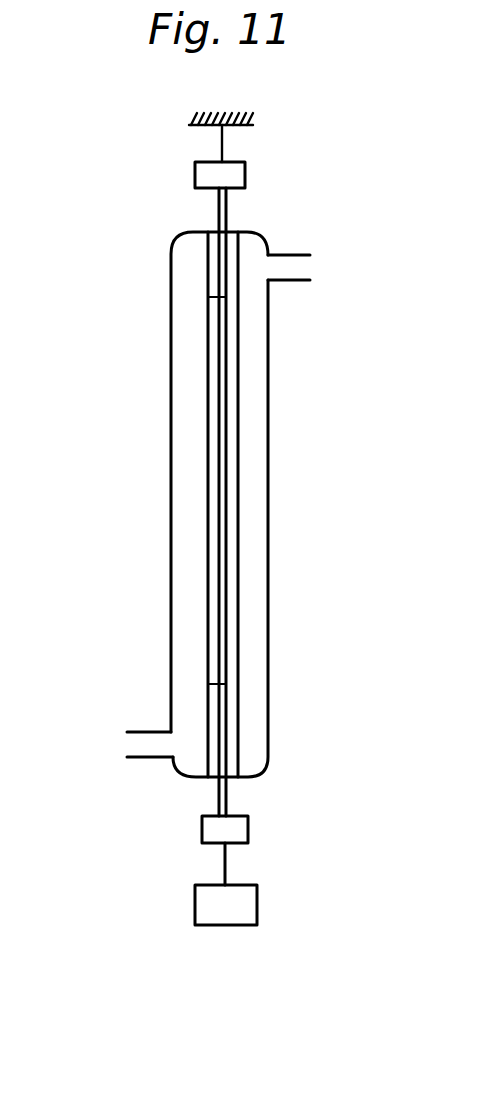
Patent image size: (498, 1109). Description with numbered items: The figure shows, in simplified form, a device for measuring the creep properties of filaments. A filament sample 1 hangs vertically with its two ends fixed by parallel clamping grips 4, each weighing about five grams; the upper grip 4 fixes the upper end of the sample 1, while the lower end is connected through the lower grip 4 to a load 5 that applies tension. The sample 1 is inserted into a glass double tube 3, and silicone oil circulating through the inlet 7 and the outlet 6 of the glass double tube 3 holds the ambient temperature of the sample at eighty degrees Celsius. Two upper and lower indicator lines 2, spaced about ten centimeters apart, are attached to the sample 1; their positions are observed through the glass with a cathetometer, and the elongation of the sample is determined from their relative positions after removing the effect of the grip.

The sample 1 is at (223, 438).
The indicator lines 2 is at (200, 297).
The glass double tube 3 is at (172, 552).
The parallel clamping grips 4 is at (245, 178).
The load 5 is at (238, 925).
The outlet 6 is at (312, 268).
The inlet 7 is at (113, 747).